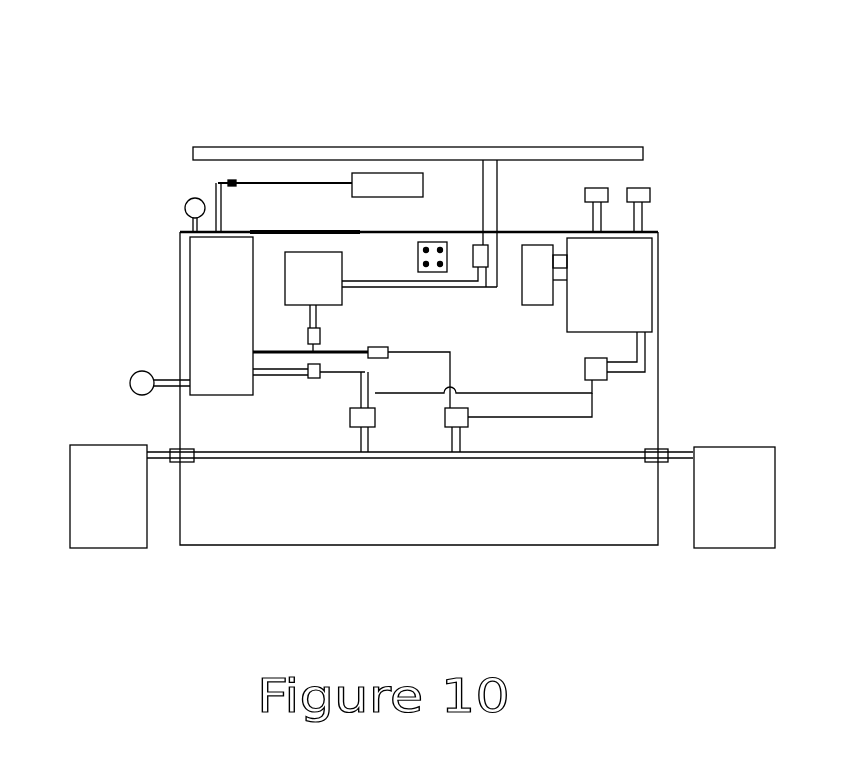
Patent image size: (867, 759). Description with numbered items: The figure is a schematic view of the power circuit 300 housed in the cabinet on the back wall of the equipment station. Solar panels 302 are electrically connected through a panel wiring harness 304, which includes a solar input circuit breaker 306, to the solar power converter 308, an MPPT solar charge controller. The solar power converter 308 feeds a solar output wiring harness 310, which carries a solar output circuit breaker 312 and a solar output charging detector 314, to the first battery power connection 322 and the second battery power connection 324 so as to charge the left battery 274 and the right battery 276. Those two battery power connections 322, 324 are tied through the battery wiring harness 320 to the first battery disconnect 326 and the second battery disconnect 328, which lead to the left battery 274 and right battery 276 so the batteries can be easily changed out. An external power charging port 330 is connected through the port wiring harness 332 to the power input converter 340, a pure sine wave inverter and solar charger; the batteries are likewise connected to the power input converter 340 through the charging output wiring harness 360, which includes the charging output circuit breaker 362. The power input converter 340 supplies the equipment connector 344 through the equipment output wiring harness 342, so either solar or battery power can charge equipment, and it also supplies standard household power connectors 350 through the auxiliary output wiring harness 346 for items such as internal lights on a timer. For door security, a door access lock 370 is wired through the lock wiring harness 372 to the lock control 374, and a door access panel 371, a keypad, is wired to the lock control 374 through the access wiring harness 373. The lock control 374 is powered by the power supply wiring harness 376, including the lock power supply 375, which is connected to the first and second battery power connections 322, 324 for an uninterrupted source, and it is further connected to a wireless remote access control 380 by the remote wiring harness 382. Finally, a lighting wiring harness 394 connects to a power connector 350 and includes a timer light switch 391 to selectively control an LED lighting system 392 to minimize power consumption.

The power circuit 300 is at (662, 68).
The solar panels 302 is at (419, 160).
The panel wiring harness 304 is at (507, 232).
The solar input circuit breaker 306 is at (476, 245).
The solar power converter 308 is at (313, 252).
The solar output wiring harness 310 is at (285, 232).
The solar output circuit breaker 312 is at (304, 333).
The solar output charging detector 314 is at (356, 395).
The battery wiring harness 320 is at (277, 456).
The first battery power connection 322 is at (352, 428).
The second battery power connection 324 is at (470, 428).
The first battery disconnect 326 is at (167, 452).
The second battery disconnect 328 is at (667, 450).
The external power charging port 330 is at (184, 203).
The port wiring harness 332 is at (191, 222).
The power input converter 340 is at (178, 232).
The equipment output wiring harness 342 is at (167, 375).
The equipment connector 344 is at (130, 383).
The auxiliary output wiring harness 346 is at (340, 233).
The household 110 volt power connectors 350 is at (436, 242).
The charging output wiring harness 360 is at (363, 389).
The charging output circuit breaker 362 is at (304, 366).
The door access lock 370 is at (608, 186).
The door access panel 371 is at (648, 188).
The lock wiring harness 372 is at (603, 220).
The access wiring harness 373 is at (642, 218).
The lock control 374 is at (653, 283).
The lock power supply 375 is at (608, 380).
The power supply wiring harness 376 is at (592, 398).
The wireless remote access control 380 is at (537, 245).
The remote wiring harness 382 is at (563, 252).
The timer light switch 391 is at (232, 180).
The LED lighting system 392 is at (387, 173).
The lighting wiring harness 394 is at (299, 315).
The left battery 274 is at (70, 497).
The right battery 276 is at (776, 500).